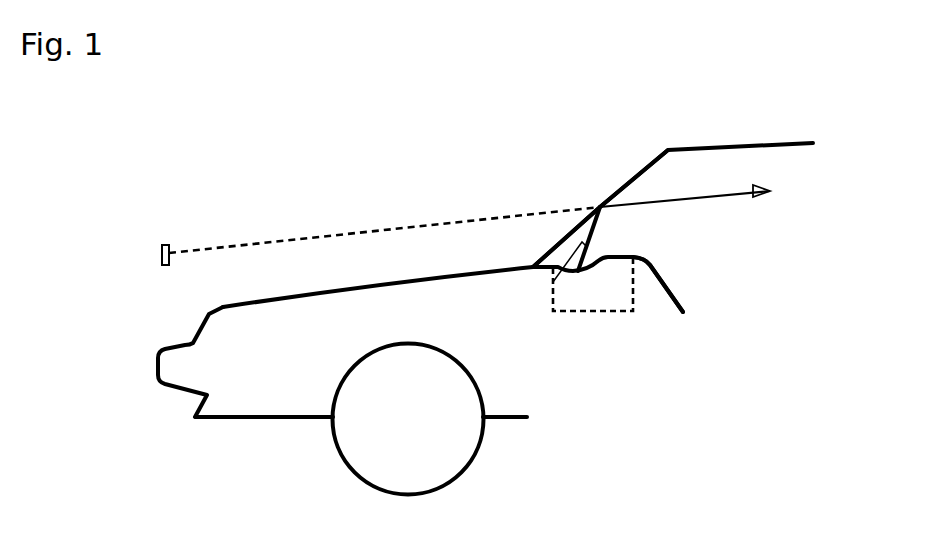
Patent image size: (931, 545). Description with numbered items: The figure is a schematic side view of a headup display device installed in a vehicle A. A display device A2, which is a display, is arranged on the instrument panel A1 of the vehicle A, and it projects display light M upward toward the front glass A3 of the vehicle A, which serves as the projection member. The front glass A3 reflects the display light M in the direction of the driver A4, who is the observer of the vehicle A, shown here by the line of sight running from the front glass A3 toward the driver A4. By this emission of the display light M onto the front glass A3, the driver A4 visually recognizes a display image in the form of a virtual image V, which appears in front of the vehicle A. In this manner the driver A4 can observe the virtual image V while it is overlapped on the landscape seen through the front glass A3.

The vehicle A is at (265, 417).
The instrument panel A1 is at (652, 263).
The display device A2 is at (598, 311).
The front glass A3 is at (625, 183).
The driver A4 is at (773, 185).
The virtual image V is at (162, 245).
The display light M is at (553, 282).